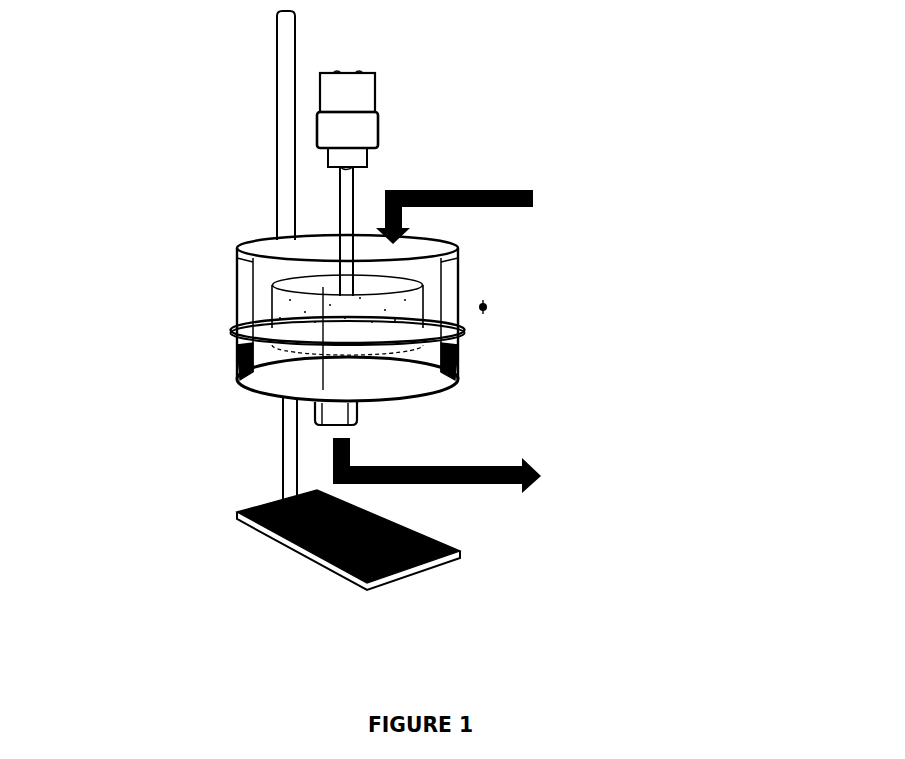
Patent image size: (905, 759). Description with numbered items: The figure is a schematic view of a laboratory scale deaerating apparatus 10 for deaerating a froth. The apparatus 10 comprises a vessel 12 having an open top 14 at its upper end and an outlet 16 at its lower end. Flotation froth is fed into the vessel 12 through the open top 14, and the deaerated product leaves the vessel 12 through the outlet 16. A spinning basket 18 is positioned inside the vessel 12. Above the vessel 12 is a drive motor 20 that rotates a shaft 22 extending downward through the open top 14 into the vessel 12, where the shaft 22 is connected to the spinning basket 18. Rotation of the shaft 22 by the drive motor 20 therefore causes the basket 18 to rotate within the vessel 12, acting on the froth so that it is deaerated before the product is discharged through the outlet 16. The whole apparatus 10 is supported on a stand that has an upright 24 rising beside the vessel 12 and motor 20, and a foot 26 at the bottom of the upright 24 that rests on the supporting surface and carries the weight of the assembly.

The apparatus 10 is at (503, 134).
The vessel 12 is at (463, 267).
The open top 14 is at (262, 250).
The outlet 16 is at (360, 413).
The spinning basket 18 is at (232, 328).
The drive motor 20 is at (342, 98).
The shaft 22 is at (344, 205).
The upright 24 is at (283, 455).
The foot 26 is at (430, 563).